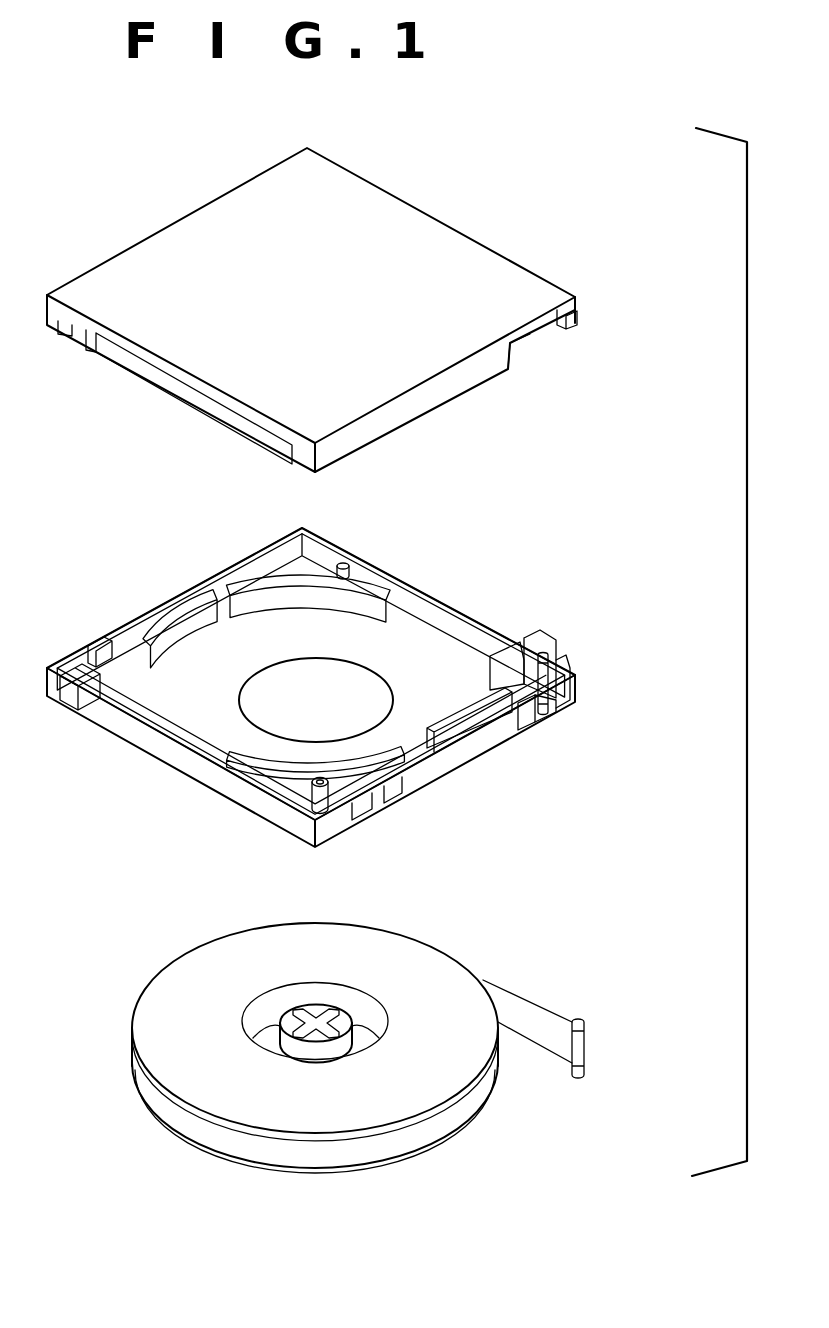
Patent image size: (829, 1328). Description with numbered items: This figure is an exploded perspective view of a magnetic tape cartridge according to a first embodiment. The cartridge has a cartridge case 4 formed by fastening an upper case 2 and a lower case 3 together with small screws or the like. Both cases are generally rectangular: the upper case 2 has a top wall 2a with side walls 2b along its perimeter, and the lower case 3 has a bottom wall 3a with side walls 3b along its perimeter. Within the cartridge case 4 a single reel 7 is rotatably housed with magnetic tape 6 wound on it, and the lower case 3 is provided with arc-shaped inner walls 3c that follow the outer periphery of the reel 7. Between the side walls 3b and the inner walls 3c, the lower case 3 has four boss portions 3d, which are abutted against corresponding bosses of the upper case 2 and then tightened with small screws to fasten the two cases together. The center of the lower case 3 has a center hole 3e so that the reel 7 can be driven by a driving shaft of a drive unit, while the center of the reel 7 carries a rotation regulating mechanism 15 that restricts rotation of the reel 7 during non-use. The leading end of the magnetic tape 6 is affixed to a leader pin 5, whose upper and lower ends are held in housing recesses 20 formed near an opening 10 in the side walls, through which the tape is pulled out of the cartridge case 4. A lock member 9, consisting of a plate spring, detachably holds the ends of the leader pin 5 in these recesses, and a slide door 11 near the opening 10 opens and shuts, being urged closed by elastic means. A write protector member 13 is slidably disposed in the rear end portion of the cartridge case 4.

The upper case 2 is at (372, 455).
The top wall 2a is at (487, 268).
The side walls 2b is at (178, 394).
The lower case 3 is at (384, 552).
The bottom wall 3a is at (187, 640).
The side walls 3b is at (446, 613).
The arc-shaped inner walls 3c is at (276, 592).
The boss portions 3d is at (345, 572).
The center hole 3e is at (246, 700).
The cartridge case 4 is at (438, 484).
The leader pin 5 is at (560, 690).
The magnetic tape 6 is at (490, 668).
The reel 7 is at (186, 958).
The lock member 9 is at (540, 650).
The opening 10 is at (520, 348).
The slide door 11 is at (456, 720).
The write protector member 13 is at (72, 704).
The rotation regulating mechanism 15 is at (326, 1008).
The housing recesses 20 is at (548, 706).